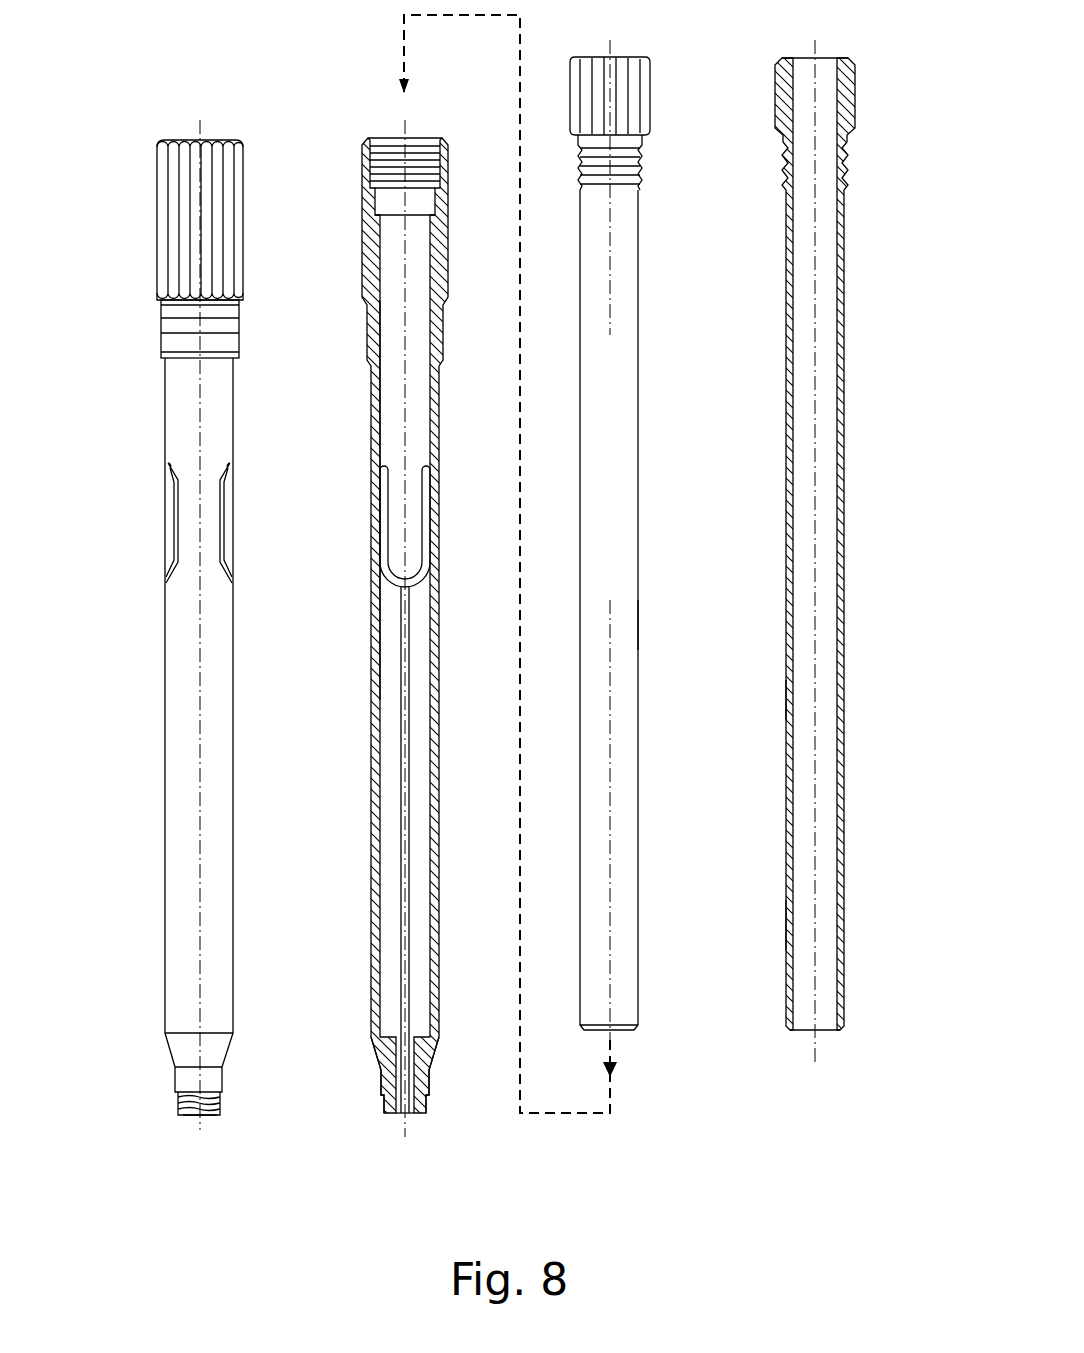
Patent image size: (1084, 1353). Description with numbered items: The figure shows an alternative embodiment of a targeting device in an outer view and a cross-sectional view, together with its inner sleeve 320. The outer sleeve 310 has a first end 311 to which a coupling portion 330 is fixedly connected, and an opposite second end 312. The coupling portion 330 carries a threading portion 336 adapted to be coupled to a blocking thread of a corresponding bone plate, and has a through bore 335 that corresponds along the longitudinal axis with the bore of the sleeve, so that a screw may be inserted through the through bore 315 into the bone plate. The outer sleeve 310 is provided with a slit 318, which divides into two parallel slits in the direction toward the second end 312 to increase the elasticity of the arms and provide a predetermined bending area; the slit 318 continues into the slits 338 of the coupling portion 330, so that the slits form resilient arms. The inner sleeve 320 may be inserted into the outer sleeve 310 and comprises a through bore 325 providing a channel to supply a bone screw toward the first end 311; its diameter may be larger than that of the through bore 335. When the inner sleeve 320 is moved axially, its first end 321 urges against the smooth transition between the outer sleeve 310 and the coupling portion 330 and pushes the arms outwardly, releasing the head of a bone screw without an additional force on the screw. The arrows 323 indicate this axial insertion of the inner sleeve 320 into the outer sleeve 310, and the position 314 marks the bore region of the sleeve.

The outer sleeve 310 is at (368, 617).
The first end of the outer sleeve 311 is at (306, 646).
The second end of the outer sleeve 312 is at (400, 619).
The inner bore of sleeve 314 is at (381, 414).
The through bore 315 is at (397, 323).
The slit 318 is at (400, 767).
The inner sleeve 320 is at (677, 548).
The first end of the inner sleeve 321 is at (643, 1012).
The insertion direction arrows 323 is at (641, 627).
The through bore 325 is at (802, 288).
The coupling portion 330 is at (250, 1036).
The through bore of the coupling portion 335 is at (190, 1118).
The threading portion 336 is at (218, 1108).
The slits of the coupling portion 338 is at (426, 1093).